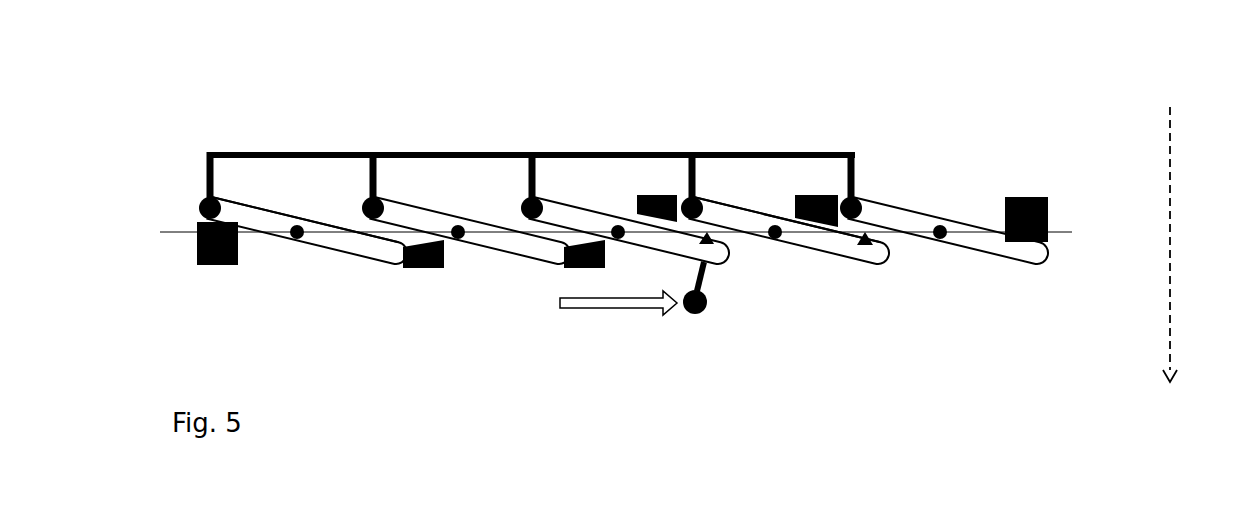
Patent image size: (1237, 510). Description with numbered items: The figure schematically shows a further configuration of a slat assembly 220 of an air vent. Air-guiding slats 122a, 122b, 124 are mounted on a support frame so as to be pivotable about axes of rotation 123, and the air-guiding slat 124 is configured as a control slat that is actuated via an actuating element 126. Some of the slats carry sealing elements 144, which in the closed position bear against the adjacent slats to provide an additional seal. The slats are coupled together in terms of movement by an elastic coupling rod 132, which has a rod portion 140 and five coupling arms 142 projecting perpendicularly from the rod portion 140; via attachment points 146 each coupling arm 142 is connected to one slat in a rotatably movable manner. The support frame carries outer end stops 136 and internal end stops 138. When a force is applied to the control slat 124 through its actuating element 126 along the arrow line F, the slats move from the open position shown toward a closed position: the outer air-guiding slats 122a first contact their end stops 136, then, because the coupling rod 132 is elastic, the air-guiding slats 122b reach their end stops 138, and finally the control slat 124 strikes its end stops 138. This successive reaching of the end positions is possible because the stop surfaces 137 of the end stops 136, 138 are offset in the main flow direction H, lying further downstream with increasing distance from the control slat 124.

The slat assembly 220 is at (962, 118).
The rod portion 140 is at (412, 152).
The coupling rod 132 is at (463, 150).
The coupling arms 142 is at (207, 173).
The attachment points 146 is at (370, 203).
The outer air-guiding slats 122a is at (330, 250).
The air-guiding slats 122b is at (497, 250).
The control slat 124 is at (566, 200).
The sealing elements 144 is at (737, 207).
The axes of rotation 123 is at (943, 222).
The outer end stops 136 is at (210, 267).
The internal end stops 138 is at (657, 194).
The stop surfaces 137 is at (649, 224).
The actuating element 126 is at (688, 316).